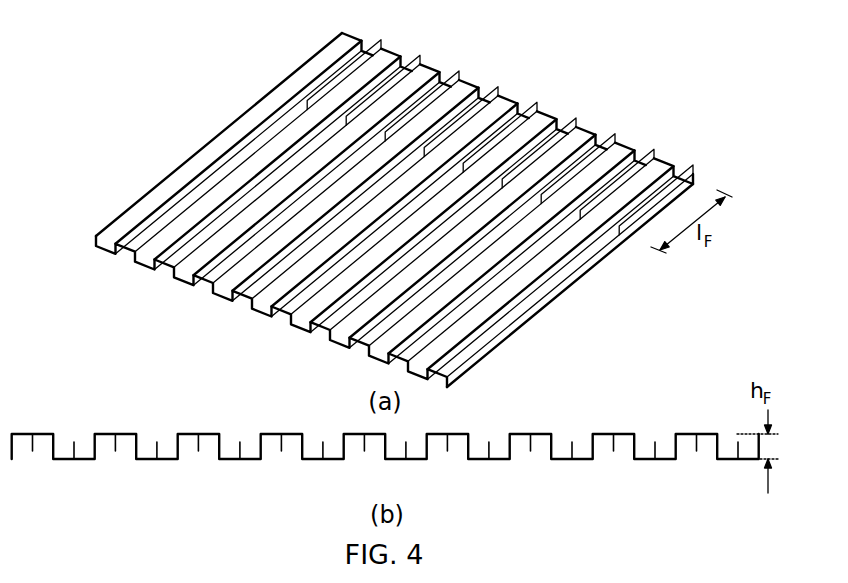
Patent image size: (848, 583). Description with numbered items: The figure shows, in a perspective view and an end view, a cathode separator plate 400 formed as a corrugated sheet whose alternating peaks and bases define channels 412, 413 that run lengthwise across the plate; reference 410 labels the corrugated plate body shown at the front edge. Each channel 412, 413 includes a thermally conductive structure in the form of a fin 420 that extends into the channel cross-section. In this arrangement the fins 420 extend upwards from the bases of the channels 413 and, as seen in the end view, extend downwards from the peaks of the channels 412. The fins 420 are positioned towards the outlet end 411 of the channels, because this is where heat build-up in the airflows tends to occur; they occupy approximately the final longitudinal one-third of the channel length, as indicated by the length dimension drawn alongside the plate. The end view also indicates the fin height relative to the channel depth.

The separator plate 400 is at (662, 133).
The corrugated film body 410 is at (155, 272).
The outlet end 411 is at (418, 64).
The channel 412 is at (262, 314).
The channel 413 is at (307, 153).
The fin 420 is at (337, 73).